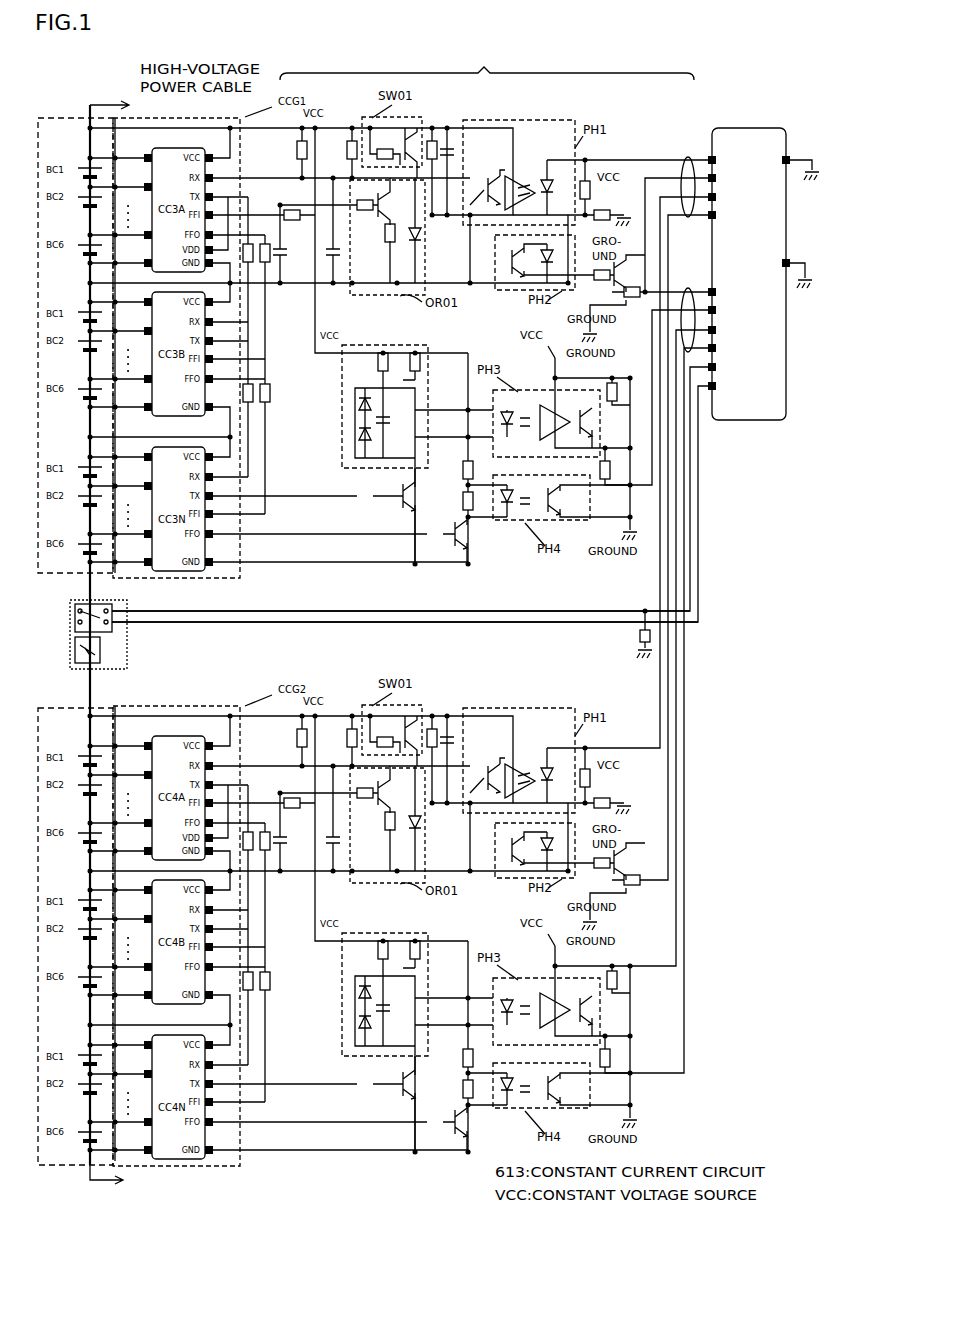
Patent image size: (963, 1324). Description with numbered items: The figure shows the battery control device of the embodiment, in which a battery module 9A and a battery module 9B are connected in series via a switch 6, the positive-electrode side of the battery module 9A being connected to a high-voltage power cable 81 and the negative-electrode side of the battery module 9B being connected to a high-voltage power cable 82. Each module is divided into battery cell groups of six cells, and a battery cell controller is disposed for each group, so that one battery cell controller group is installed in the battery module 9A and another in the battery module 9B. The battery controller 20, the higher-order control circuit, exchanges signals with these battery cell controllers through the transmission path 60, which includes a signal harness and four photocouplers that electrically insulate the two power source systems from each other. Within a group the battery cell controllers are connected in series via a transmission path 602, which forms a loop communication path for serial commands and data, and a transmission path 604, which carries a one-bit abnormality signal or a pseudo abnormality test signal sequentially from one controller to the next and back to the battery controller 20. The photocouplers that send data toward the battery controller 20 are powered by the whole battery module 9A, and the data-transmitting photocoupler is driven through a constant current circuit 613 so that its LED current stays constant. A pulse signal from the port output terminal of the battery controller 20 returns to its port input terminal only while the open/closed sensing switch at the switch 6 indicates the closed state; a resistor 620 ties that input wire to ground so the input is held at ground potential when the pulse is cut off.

The battery module 9A is at (74, 117).
The battery module 9B is at (75, 933).
The high-voltage power cable 81 is at (123, 105).
The high-voltage power cable 82 is at (206, 1190).
The transmission path 60 is at (487, 65).
The battery controller 20 is at (716, 128).
The transmission path 602 is at (676, 902).
The transmission path 604 is at (684, 956).
The constant current circuit 613 is at (385, 692).
The switch 6 is at (128, 656).
The resistor 620 is at (638, 640).